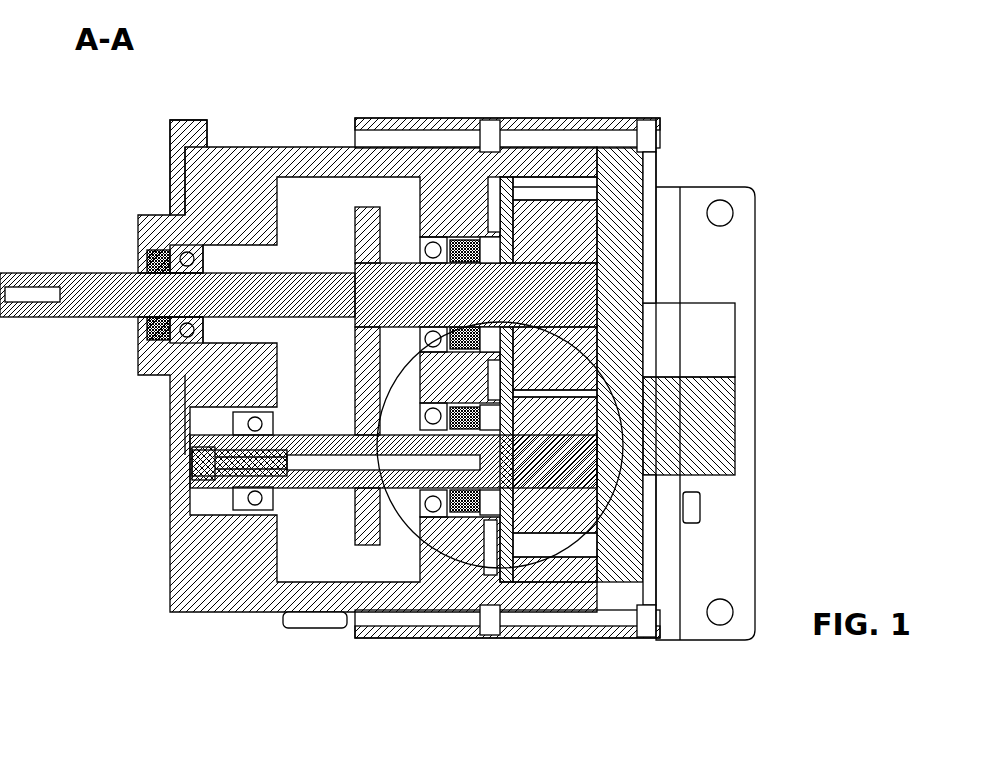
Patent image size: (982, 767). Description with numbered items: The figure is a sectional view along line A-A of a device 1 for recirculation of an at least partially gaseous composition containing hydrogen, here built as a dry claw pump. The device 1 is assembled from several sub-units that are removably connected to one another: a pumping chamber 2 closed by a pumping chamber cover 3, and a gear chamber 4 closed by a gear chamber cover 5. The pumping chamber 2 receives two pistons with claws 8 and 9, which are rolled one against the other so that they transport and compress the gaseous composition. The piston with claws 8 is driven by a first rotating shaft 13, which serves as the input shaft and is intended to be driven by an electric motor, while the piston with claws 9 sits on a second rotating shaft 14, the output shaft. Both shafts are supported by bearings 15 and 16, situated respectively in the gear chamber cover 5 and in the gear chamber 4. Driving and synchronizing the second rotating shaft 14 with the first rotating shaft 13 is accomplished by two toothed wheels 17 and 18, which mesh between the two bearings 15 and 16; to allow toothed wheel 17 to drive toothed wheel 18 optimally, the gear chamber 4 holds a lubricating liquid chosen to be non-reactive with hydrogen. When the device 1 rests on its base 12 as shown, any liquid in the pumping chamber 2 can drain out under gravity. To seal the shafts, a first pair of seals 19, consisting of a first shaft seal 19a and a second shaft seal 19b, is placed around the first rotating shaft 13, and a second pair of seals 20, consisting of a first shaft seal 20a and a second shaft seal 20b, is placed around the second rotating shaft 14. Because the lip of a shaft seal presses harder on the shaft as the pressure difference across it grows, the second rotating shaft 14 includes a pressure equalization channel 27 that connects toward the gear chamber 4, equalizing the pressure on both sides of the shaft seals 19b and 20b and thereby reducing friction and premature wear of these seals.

The device for recirculation 1 is at (730, 55).
The pumping chamber 2 is at (612, 122).
The pumping chamber cover 3 is at (637, 170).
The gear chamber 4 is at (283, 590).
The gear chamber cover 5 is at (455, 565).
The piston with claws 8 is at (590, 212).
The piston with claws 9 is at (597, 520).
The base 12 is at (740, 255).
The first rotating shaft 13 is at (85, 272).
The second rotating shaft 14 is at (277, 522).
The bearing 15 is at (420, 240).
The bearing 16 is at (235, 147).
The toothed wheel 17 is at (370, 207).
The toothed wheel 18 is at (268, 572).
The first pair of seals 19 is at (640, 35).
The first shaft seal 19a is at (570, 175).
The second shaft seal 19b is at (509, 178).
The second pair of seals 20 is at (548, 680).
The first shaft seal 20a is at (470, 585).
The second shaft seal 20b is at (445, 580).
The pressure equalization channel 27 is at (200, 457).